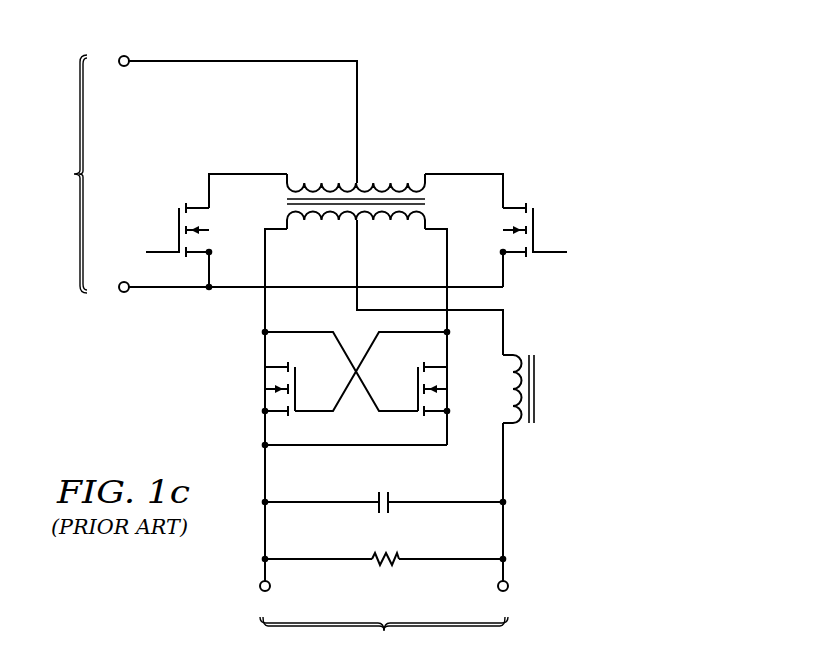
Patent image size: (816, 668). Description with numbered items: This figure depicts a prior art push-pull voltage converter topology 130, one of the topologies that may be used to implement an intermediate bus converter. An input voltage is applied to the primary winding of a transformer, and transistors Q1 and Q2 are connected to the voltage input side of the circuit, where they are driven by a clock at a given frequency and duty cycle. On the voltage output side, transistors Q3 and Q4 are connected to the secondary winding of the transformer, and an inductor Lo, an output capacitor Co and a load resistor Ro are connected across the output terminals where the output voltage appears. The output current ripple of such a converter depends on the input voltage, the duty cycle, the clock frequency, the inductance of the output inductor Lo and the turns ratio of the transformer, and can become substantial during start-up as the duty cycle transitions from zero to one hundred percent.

The push-pull voltage converter topology 130 is at (484, 58).
The primary-side switch transistor Q1 is at (192, 230).
The primary-side switch transistor Q2 is at (519, 230).
The secondary-side synchronous rectifier transistor Q3 is at (265, 389).
The secondary-side synchronous rectifier transistor Q4 is at (448, 389).
The output inductor Lo is at (534, 389).
The output capacitor Co is at (384, 491).
The load resistor Ro is at (385, 548).